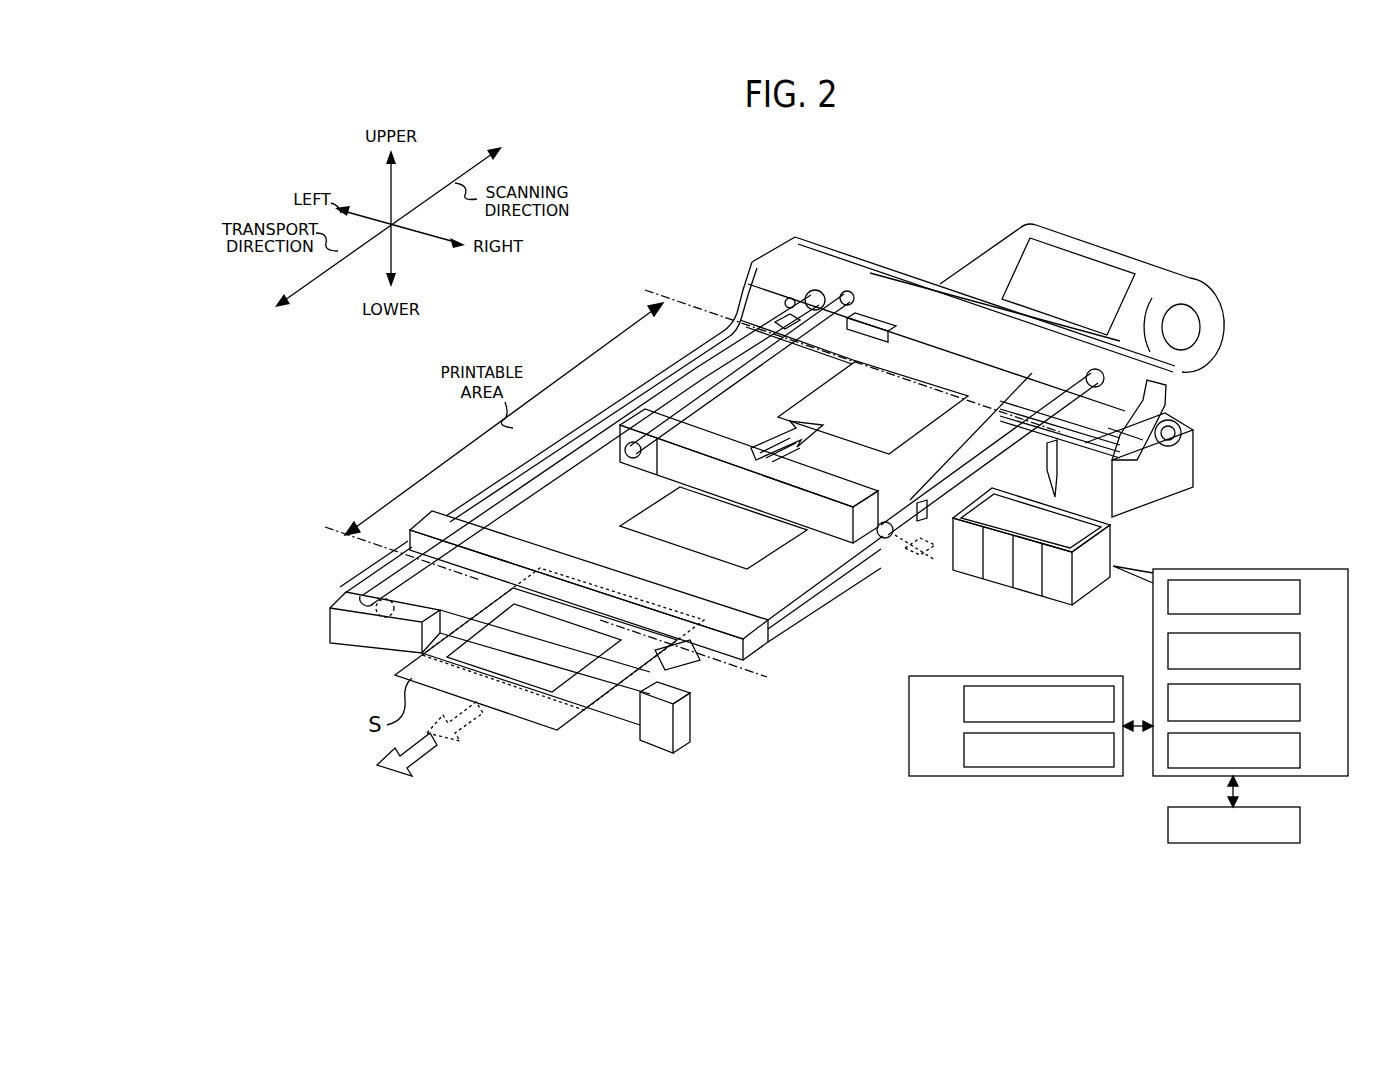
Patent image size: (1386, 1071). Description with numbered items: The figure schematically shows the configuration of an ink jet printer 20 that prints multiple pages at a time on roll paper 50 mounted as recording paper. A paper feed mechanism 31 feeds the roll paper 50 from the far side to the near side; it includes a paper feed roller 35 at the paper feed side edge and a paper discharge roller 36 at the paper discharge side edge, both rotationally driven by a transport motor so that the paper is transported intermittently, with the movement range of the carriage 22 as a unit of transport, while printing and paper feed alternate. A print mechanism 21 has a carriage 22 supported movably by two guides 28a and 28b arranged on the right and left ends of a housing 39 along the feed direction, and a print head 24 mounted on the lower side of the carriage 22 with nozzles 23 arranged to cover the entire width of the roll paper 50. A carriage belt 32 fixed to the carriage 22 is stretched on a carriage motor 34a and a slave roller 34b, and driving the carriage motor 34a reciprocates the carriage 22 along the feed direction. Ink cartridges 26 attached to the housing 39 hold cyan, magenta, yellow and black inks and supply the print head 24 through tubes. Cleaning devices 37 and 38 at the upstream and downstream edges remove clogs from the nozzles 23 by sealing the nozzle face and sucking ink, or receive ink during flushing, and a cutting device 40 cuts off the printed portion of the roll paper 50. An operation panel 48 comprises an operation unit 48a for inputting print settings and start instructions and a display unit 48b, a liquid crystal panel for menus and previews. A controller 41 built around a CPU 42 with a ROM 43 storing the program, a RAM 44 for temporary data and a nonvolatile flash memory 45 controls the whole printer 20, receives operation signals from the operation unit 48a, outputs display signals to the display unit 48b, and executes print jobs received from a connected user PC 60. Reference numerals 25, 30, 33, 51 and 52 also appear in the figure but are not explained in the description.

The printer 20 is at (1138, 195).
The print mechanism 21 is at (887, 255).
The carriage 22 is at (878, 550).
The nozzles 23 is at (933, 548).
The print head 24 is at (905, 548).
The carriage 25 is at (773, 523).
The ink cartridges 26 is at (1017, 595).
The guide 28a is at (838, 290).
The guide 28b is at (787, 603).
The printing unit 30 is at (715, 210).
The paper feed mechanism 31 is at (1252, 437).
The carriage belt 32 is at (783, 327).
The bracket 33 is at (1183, 412).
The carriage motor 34a is at (812, 283).
The slave roller 34b is at (362, 595).
The paper feed roller 35 is at (1108, 428).
The paper discharge roller 36 is at (683, 658).
The cleaning device 37 is at (660, 690).
The cleaning device 38 is at (1033, 457).
The housing 39 is at (738, 300).
The cutting device 40 is at (758, 643).
The controller 41 is at (1287, 568).
The CPU 42 is at (1301, 599).
The ROM 43 is at (1301, 652).
The RAM 44 is at (1301, 704).
The flash memory 45 is at (1301, 751).
The operation panel 48 is at (1068, 676).
The operation unit 48a is at (964, 704).
The display unit 48b is at (964, 751).
The roll paper 50 is at (1153, 258).
The medium in transported position 51 is at (400, 665).
The printed image 52 is at (513, 690).
The user PC 60 is at (1301, 826).